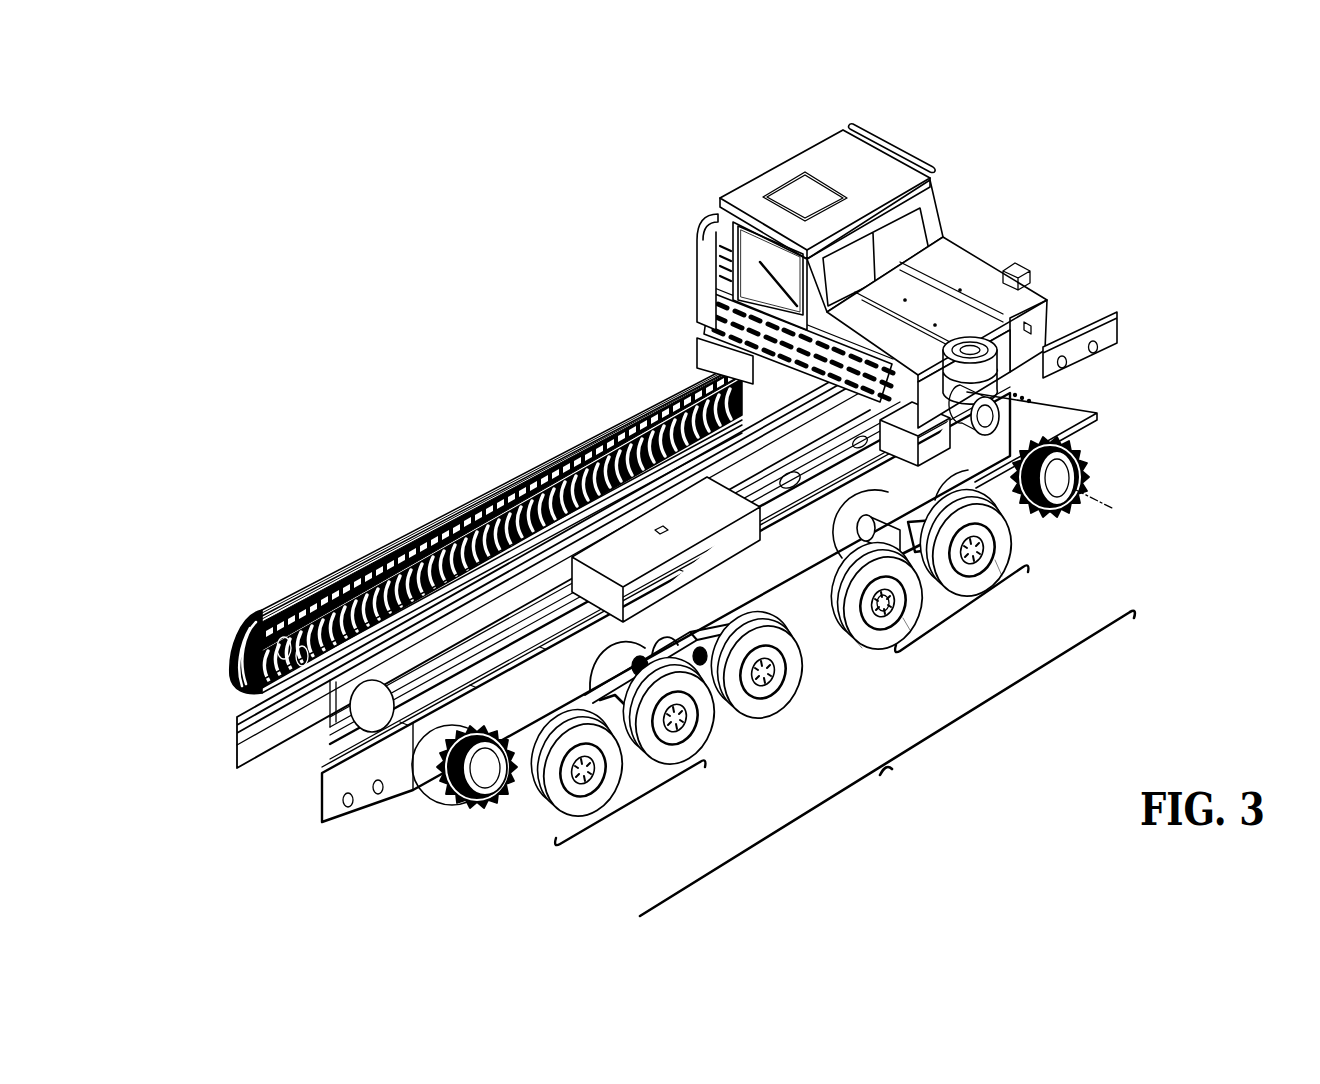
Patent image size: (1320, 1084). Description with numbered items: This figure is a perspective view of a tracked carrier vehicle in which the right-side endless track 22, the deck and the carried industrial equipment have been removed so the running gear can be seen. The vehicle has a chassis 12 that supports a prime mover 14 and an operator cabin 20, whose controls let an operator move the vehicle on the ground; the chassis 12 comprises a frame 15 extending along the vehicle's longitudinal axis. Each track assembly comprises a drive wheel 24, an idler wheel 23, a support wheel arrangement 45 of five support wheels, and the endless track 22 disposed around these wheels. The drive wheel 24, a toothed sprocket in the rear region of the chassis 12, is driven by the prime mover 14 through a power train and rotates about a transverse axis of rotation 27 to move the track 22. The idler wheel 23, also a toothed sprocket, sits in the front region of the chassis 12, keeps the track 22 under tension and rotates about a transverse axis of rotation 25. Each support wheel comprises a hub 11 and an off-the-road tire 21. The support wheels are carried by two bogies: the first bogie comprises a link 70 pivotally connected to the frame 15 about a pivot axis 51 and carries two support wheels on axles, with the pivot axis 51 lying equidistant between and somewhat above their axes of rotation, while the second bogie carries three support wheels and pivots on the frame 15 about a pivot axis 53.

The operator cabin 20 is at (702, 124).
The chassis 12 is at (729, 464).
The prime mover 14 is at (1016, 397).
The frame 15 is at (552, 687).
The endless track 22 is at (430, 552).
The idler wheel 23 is at (1088, 452).
The axis of rotation 25 is at (1108, 507).
The drive wheel 24 is at (464, 804).
The axis of rotation 27 is at (512, 793).
The hub 11 is at (870, 594).
The tire 21 is at (848, 650).
The pivot axis 51 is at (846, 512).
The pivot axis 53 is at (598, 650).
The link 70 is at (923, 534).
The support wheel arrangement 45 is at (846, 670).